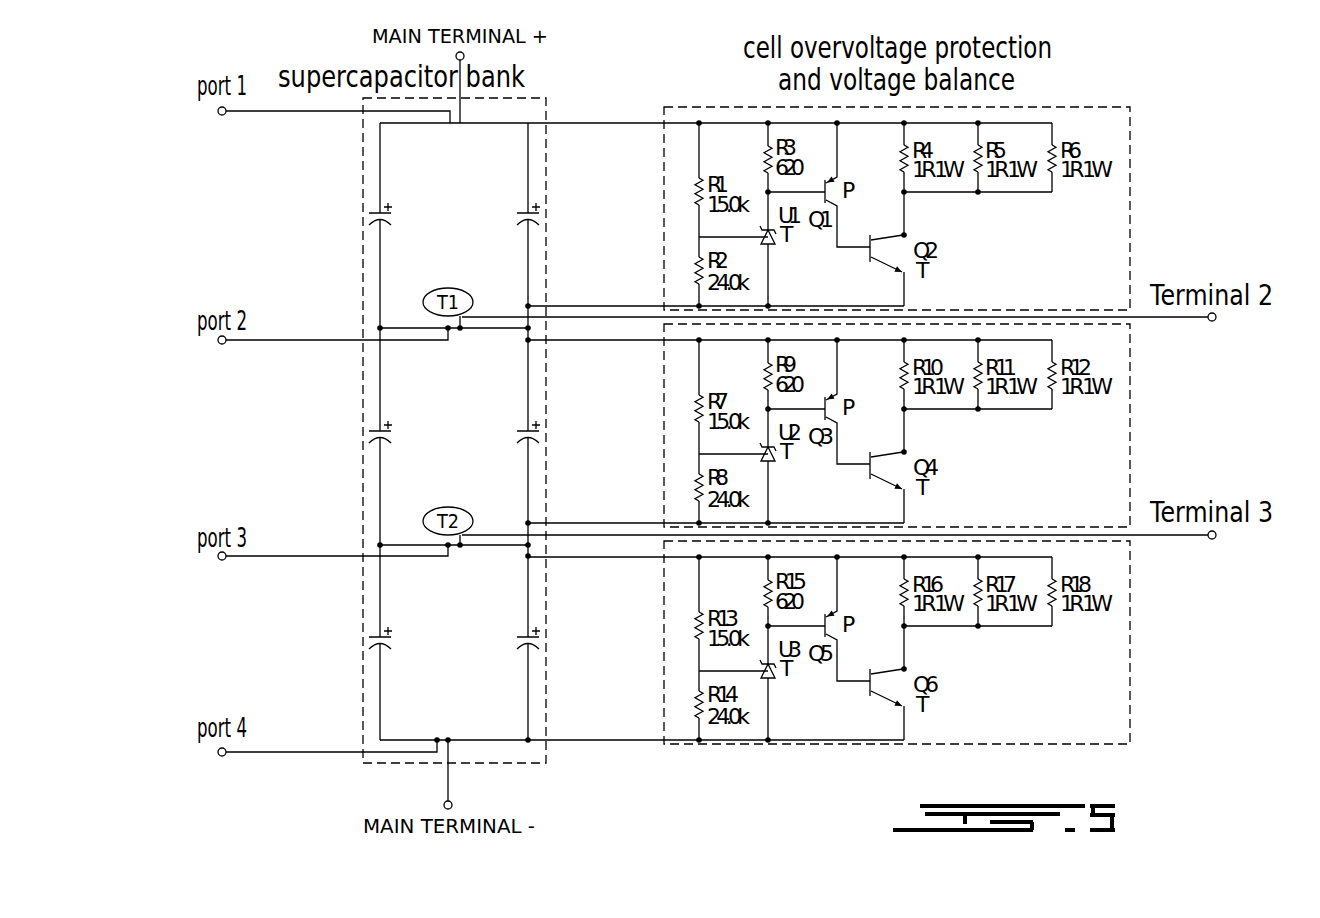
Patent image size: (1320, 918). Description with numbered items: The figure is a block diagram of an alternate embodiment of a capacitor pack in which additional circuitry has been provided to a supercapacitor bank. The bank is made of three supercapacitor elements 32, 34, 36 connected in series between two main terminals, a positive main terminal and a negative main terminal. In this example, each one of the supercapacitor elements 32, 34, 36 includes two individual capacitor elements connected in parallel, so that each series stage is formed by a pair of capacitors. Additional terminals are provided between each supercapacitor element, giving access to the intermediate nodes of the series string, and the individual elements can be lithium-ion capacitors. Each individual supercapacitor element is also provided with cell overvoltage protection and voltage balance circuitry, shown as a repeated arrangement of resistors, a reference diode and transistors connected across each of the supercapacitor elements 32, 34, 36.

The supercapacitor element 32 is at (336, 221).
The supercapacitor element 34 is at (330, 436).
The supercapacitor element 36 is at (335, 641).